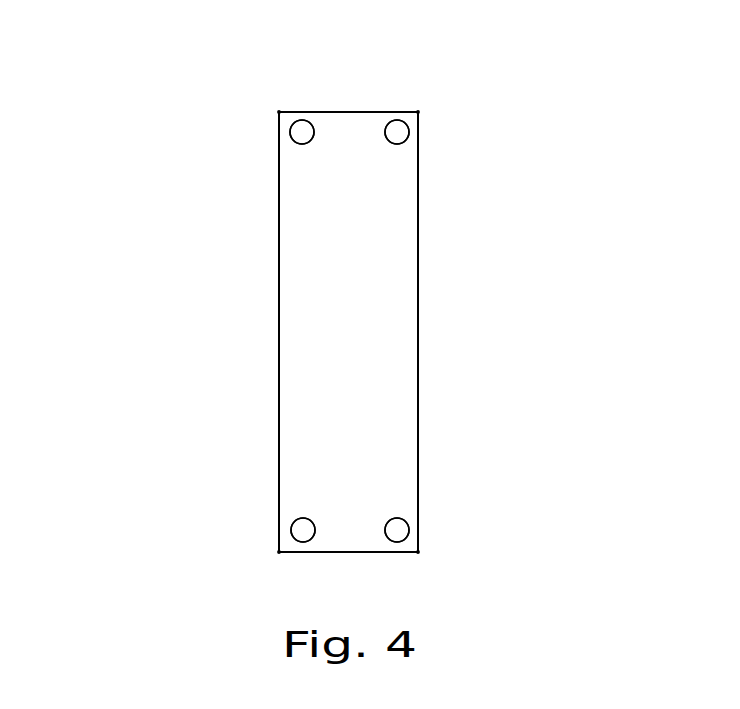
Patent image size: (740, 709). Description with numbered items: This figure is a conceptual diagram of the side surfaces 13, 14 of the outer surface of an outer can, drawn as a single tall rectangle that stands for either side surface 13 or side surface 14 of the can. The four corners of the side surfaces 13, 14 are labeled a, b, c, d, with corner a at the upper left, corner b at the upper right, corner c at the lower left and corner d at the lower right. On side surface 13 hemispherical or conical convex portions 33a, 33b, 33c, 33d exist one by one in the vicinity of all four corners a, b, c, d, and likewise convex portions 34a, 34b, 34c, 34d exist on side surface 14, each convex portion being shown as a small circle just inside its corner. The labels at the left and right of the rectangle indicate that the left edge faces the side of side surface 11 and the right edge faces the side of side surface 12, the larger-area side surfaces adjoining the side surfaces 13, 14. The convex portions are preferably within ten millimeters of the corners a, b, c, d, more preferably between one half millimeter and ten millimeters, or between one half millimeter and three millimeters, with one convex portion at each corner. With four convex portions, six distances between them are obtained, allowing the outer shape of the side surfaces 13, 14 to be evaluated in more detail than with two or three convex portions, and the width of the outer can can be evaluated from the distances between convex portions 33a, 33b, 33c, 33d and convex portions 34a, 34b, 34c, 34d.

The side surface 13 is at (128, 62).
The side surface 14 is at (183, 62).
The side surface 11 is at (263, 294).
The side surface 12 is at (637, 294).
The convex portion 33a is at (290, 131).
The convex portion 34a is at (302, 132).
The convex portion 33b is at (409, 131).
The convex portion 34b is at (397, 132).
The convex portion 33c is at (292, 528).
The convex portion 34c is at (303, 530).
The convex portion 33d is at (408, 528).
The convex portion 34d is at (397, 530).
The corner a is at (279, 112).
The corner b is at (418, 112).
The corner c is at (279, 552).
The corner d is at (418, 552).